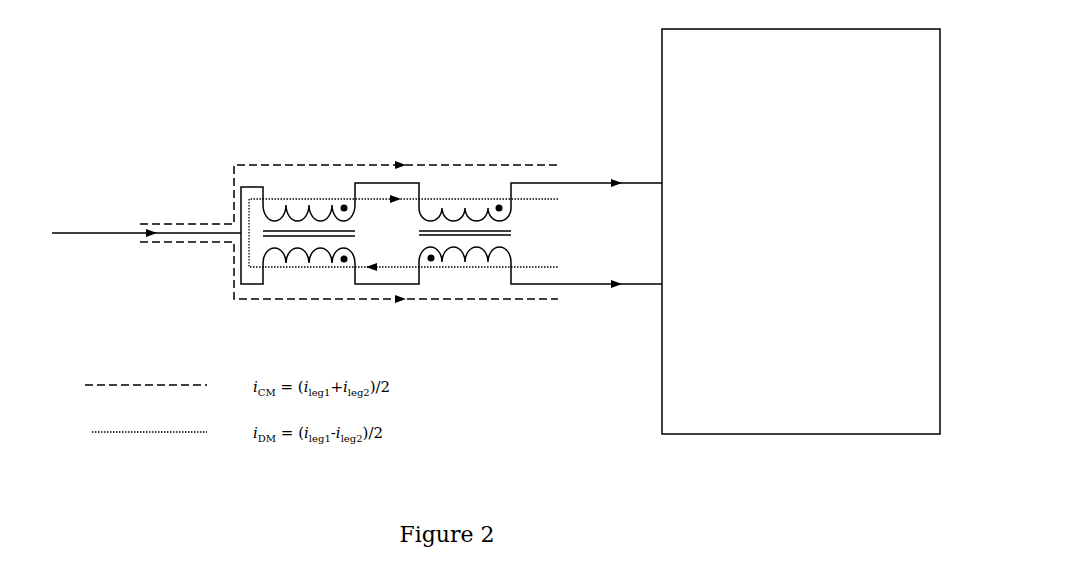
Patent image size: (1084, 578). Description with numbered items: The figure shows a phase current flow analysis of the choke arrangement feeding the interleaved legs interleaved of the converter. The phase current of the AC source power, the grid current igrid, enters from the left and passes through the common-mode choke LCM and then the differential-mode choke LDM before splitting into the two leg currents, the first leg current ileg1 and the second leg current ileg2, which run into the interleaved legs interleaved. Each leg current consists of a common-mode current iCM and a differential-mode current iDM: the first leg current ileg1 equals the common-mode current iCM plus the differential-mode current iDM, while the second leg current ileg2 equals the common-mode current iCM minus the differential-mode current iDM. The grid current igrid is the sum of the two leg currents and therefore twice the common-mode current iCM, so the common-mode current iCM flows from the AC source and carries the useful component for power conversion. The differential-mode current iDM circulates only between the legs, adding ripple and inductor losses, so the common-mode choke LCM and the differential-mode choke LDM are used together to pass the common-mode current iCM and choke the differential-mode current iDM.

The interleaved legs interleaved is at (801, 231).
The grid current igrid is at (146, 215).
The common-mode choke LCM is at (298, 230).
The differential-mode choke LDM is at (433, 230).
The first leg current ileg1 is at (586, 180).
The second leg current ileg2 is at (586, 269).
The common-mode current iCM is at (349, 232).
The differential-mode current iDM is at (403, 233).